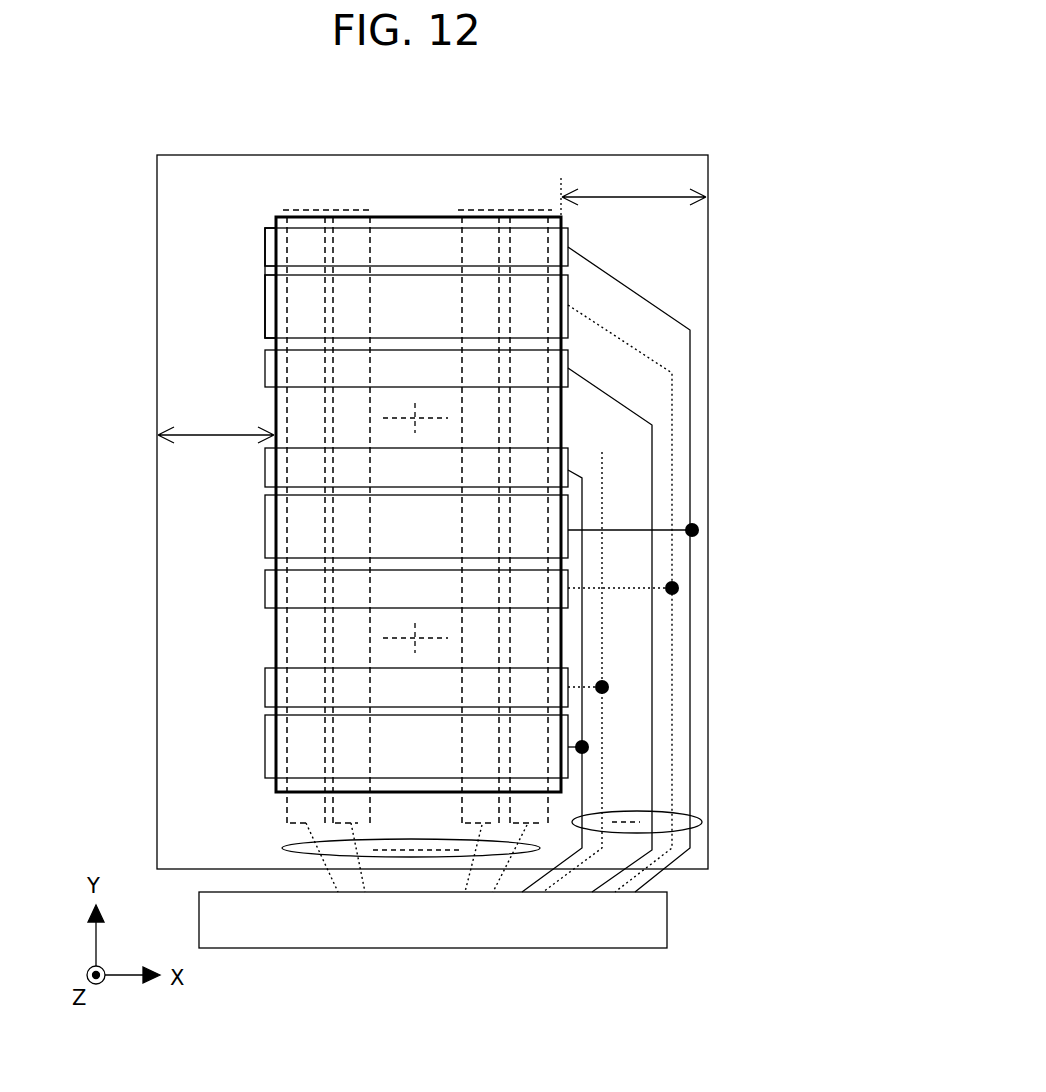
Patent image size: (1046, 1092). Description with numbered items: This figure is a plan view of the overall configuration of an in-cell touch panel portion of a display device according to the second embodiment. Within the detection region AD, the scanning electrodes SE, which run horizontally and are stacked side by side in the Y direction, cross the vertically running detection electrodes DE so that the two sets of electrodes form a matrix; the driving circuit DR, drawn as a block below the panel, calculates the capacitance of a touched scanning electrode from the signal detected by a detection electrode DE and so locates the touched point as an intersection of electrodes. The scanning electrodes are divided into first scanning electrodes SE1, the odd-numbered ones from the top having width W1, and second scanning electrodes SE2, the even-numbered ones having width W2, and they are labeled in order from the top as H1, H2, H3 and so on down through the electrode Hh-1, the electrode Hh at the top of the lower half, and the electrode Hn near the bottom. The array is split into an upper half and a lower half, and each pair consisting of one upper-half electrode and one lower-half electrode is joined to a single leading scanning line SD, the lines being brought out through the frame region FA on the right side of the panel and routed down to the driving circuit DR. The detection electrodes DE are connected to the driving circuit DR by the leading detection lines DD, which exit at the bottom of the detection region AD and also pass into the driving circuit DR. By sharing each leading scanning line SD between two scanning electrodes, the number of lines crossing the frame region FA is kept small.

The detection electrode DE is at (308, 212).
The detection region AD is at (418, 217).
The frame region FA is at (432, 305).
The scanning electrode SE is at (70, 217).
The first scanning electrode SE1 is at (265, 253).
The second scanning electrode SE2 is at (265, 293).
The first scanning electrode position H1 is at (416, 247).
The second scanning electrode position H2 is at (416, 306).
The third scanning electrode position H3 is at (416, 368).
The (h-1)-th scanning electrode position Hh-1 is at (416, 467).
The h-th scanning electrode position Hh is at (416, 526).
The n-th scanning electrode position Hn is at (416, 687).
The leading detection line DD is at (288, 838).
The leading scanning line SD is at (693, 806).
The driving circuit DR is at (433, 920).